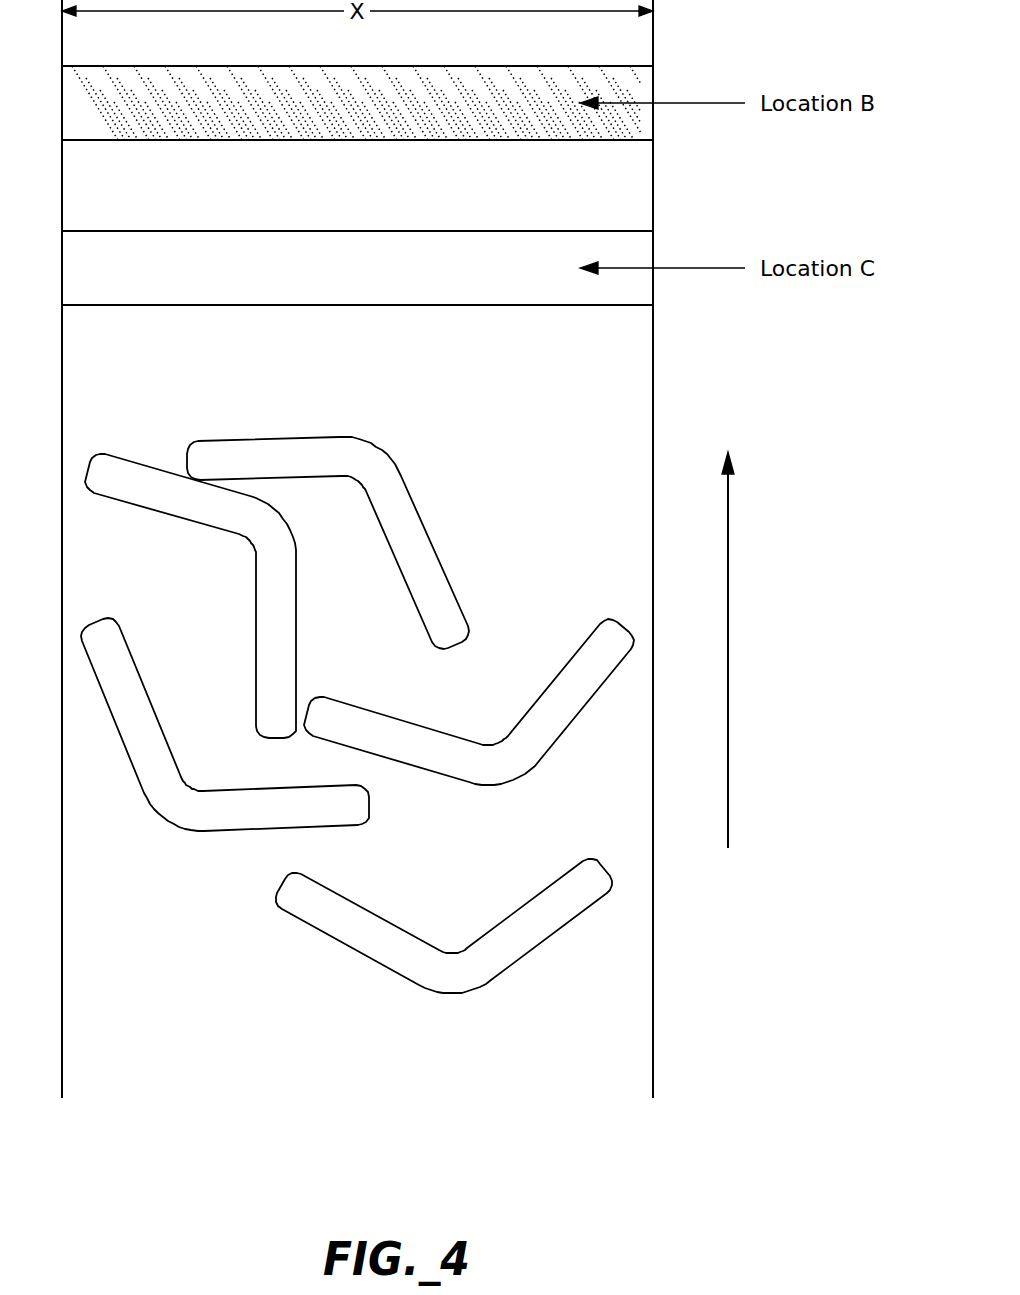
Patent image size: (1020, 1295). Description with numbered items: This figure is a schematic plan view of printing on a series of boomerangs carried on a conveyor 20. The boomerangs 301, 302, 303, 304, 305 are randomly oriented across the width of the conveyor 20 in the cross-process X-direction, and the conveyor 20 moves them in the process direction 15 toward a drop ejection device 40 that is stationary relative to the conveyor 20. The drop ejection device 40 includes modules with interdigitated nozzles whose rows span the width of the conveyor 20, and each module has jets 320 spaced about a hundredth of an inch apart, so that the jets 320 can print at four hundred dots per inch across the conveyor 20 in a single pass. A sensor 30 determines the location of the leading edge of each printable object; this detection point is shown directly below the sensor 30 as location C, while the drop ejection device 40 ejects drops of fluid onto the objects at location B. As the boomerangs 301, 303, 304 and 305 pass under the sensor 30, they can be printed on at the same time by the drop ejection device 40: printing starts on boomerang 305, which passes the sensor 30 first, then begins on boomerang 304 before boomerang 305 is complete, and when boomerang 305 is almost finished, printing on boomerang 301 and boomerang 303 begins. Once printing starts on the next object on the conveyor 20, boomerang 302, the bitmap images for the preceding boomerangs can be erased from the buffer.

The process direction 15 is at (728, 695).
The conveyor 20 is at (131, 1052).
The sensor 30 is at (371, 280).
The drop ejection device 40 is at (373, 112).
The jets 320 is at (173, 122).
The boomerang 301 is at (259, 821).
The boomerang 302 is at (471, 979).
The boomerang 303 is at (518, 777).
The boomerang 304 is at (288, 557).
The boomerang 305 is at (374, 477).